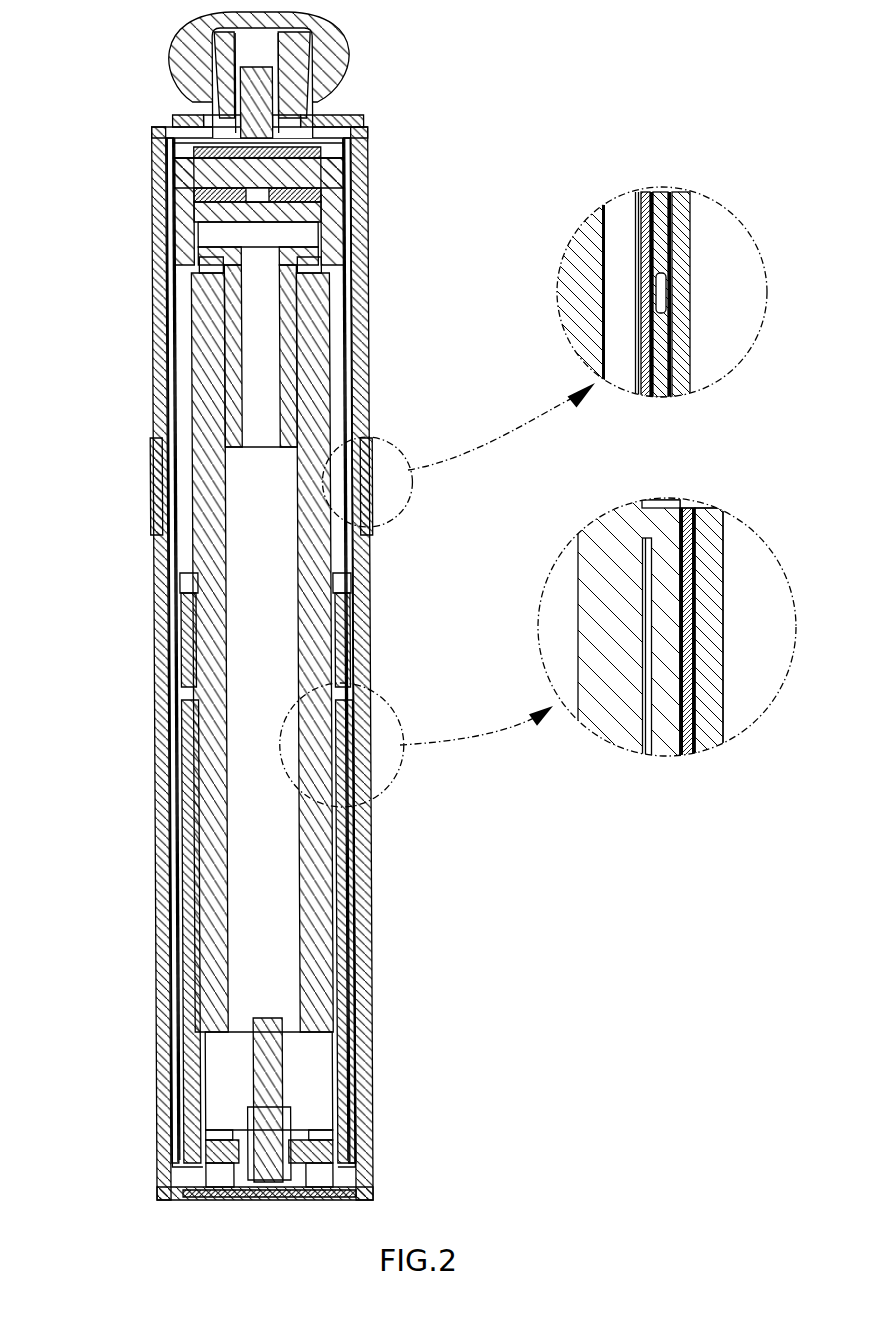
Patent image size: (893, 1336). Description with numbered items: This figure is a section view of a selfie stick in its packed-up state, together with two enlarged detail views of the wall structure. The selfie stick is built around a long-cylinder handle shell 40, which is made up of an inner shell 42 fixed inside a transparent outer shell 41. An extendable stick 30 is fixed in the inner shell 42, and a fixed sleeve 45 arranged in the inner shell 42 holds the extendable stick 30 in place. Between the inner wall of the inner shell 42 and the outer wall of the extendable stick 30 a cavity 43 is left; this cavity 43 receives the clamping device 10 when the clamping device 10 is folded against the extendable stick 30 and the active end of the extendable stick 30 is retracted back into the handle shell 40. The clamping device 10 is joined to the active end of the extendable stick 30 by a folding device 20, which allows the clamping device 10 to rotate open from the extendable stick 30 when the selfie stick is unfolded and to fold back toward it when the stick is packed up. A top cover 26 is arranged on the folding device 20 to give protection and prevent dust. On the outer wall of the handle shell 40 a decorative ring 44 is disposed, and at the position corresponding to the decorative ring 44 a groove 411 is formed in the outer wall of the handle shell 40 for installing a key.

The clamping device 10 is at (160, 620).
The folding device 20 is at (176, 100).
The top cover 26 is at (334, 114).
The extendable stick 30 is at (205, 556).
The handle shell 40 is at (74, 697).
The outer shell 41 is at (172, 748).
The groove 411 is at (670, 290).
The inner shell 42 is at (170, 714).
The cavity 43 is at (178, 360).
The decorative ring 44 is at (152, 483).
The fixed sleeve 45 is at (647, 746).